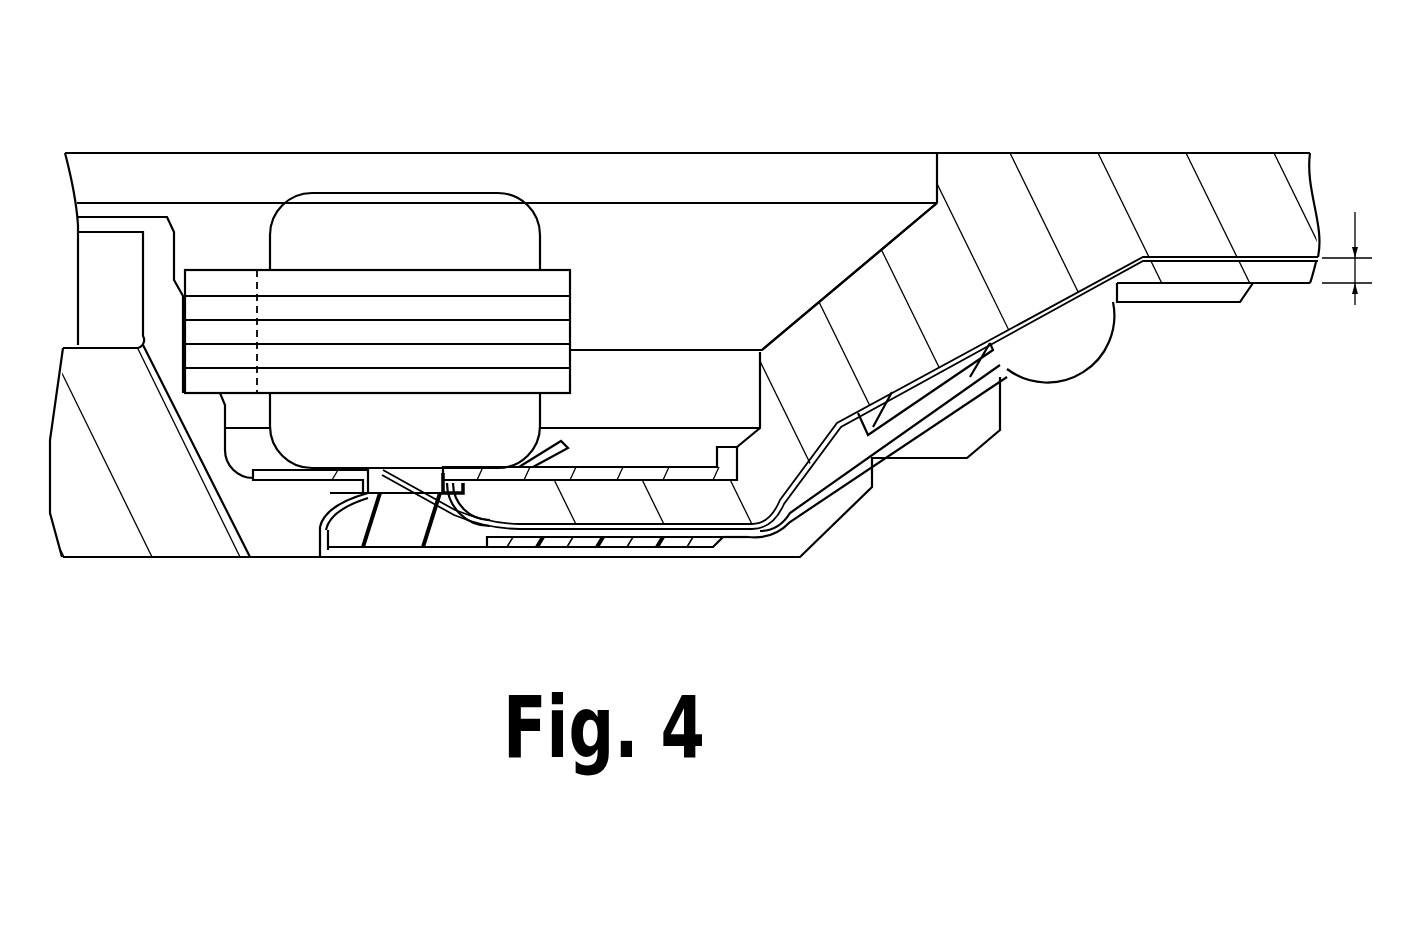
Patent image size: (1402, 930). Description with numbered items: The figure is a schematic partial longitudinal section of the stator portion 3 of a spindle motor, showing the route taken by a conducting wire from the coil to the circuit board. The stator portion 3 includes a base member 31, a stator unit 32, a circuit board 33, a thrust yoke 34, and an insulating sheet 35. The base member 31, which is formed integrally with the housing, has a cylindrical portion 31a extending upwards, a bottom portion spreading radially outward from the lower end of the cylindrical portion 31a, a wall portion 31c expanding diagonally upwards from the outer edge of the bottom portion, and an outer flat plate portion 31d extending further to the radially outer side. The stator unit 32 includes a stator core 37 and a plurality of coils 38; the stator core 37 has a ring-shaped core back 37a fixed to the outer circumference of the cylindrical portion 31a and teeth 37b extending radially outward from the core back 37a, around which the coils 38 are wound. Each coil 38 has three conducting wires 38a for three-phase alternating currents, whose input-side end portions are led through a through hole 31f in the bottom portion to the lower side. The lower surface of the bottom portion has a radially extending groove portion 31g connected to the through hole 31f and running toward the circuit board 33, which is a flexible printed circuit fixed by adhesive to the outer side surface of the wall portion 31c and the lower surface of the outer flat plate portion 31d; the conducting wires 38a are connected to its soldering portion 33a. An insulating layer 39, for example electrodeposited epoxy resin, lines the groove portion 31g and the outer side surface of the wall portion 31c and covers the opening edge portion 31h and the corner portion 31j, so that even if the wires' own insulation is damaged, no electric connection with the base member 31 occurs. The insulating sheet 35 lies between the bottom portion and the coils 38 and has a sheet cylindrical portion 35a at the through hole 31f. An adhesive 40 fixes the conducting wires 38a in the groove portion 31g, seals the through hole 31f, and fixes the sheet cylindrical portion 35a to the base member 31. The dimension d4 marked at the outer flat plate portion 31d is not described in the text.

The stator portion 3 is at (1006, 108).
The base member 31 is at (210, 575).
The cylindrical portion 31a is at (105, 458).
The wall portion 31c is at (869, 320).
The outer flat plate portion 31d is at (1210, 175).
The through hole 31f is at (404, 512).
The groove portion 31g is at (653, 560).
The opening edge portion 31h is at (453, 487).
The corner portion 31j is at (753, 512).
The stator unit 32 is at (458, 180).
The circuit board 33 is at (1189, 272).
The soldering portion 33a is at (1080, 358).
The thrust yoke 34 is at (655, 470).
The insulating sheet 35 is at (518, 472).
The sheet cylindrical portion 35a is at (455, 497).
The stator core 37 is at (385, 92).
The core back 37a is at (225, 332).
The teeth 37b is at (360, 332).
The coils 38 is at (298, 443).
The conducting wires 38a is at (910, 433).
The insulating layer 39 is at (797, 483).
The adhesive 40 is at (355, 527).
The gap dimension d4 is at (1361, 258).